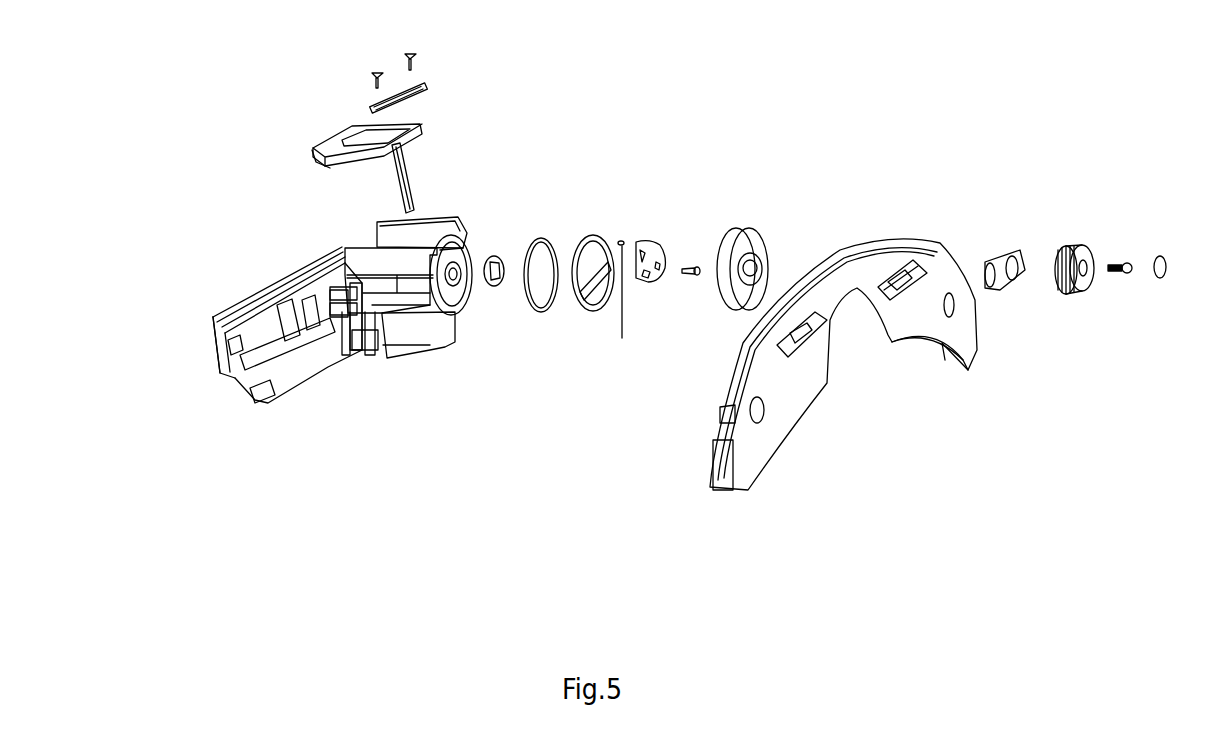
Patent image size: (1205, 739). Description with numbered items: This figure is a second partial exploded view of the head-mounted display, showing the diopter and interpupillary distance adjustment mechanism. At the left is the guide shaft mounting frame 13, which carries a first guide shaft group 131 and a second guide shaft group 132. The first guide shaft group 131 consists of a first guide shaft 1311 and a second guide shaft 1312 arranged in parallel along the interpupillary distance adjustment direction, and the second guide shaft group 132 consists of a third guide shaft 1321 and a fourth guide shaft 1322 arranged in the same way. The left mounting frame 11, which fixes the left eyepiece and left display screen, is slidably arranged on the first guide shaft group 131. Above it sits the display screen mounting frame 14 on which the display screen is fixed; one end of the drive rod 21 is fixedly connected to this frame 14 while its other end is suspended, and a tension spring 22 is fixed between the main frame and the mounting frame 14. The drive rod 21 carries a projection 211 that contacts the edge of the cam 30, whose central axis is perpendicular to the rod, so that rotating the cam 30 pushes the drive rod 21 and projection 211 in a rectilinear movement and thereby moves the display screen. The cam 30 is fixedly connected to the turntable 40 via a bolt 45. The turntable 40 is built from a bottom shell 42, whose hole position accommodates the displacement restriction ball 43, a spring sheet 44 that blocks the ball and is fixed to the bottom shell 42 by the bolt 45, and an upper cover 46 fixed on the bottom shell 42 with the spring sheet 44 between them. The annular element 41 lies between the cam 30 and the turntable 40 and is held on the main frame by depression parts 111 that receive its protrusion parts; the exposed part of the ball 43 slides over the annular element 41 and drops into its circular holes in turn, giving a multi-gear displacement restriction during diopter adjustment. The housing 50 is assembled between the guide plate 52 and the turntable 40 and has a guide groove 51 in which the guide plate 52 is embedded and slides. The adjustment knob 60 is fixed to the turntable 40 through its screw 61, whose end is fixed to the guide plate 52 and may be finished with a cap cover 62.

The left mounting frame 11 is at (345, 247).
The depression parts 111 is at (470, 238).
The guide shaft mounting frame 13 is at (310, 262).
The first guide shaft group 131 is at (418, 475).
The first guide shaft 1311 is at (348, 360).
The second guide shaft 1312 is at (366, 348).
The second guide shaft group 132 is at (165, 432).
The third guide shaft 1321 is at (272, 328).
The fourth guide shaft 1322 is at (287, 403).
The display screen mounting frame 14 is at (320, 147).
The drive rod 21 is at (407, 162).
The projection 211 is at (398, 148).
The tension spring 22 is at (412, 194).
The cam 30 is at (493, 257).
The turntable 40 is at (697, 503).
The annular element 41 is at (540, 287).
The bottom shell 42 is at (600, 297).
The displacement restriction ball 43 is at (622, 338).
The spring sheet 44 is at (643, 285).
The bolt 45 is at (690, 276).
The upper cover 46 is at (730, 308).
The housing 50 is at (843, 248).
The guide groove 51 is at (933, 247).
The guide plate 52 is at (1010, 260).
The adjustment knob 60 is at (1070, 297).
The screw 61 is at (1120, 280).
The cap cover 62 is at (1160, 280).